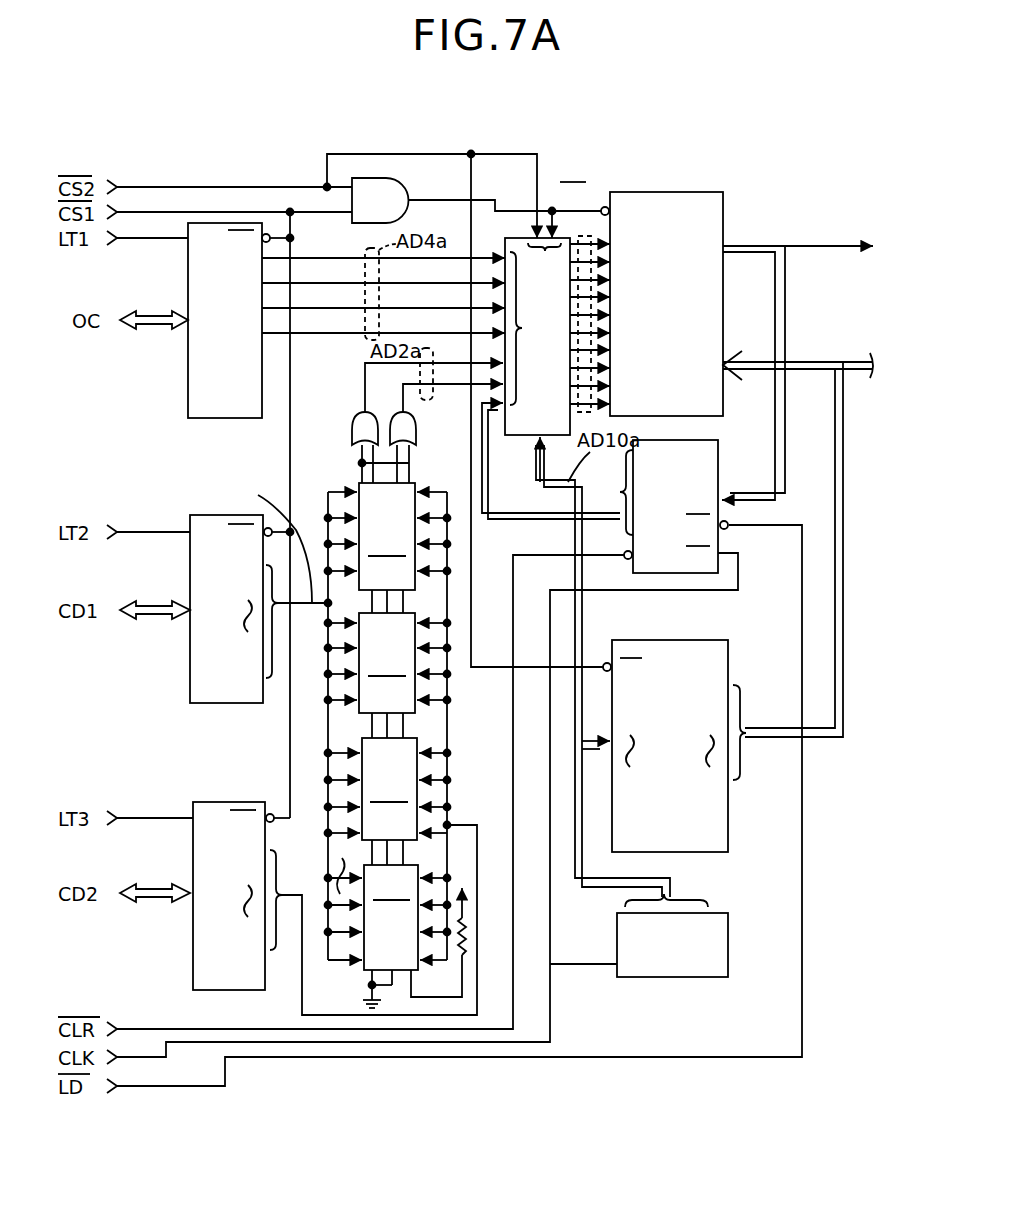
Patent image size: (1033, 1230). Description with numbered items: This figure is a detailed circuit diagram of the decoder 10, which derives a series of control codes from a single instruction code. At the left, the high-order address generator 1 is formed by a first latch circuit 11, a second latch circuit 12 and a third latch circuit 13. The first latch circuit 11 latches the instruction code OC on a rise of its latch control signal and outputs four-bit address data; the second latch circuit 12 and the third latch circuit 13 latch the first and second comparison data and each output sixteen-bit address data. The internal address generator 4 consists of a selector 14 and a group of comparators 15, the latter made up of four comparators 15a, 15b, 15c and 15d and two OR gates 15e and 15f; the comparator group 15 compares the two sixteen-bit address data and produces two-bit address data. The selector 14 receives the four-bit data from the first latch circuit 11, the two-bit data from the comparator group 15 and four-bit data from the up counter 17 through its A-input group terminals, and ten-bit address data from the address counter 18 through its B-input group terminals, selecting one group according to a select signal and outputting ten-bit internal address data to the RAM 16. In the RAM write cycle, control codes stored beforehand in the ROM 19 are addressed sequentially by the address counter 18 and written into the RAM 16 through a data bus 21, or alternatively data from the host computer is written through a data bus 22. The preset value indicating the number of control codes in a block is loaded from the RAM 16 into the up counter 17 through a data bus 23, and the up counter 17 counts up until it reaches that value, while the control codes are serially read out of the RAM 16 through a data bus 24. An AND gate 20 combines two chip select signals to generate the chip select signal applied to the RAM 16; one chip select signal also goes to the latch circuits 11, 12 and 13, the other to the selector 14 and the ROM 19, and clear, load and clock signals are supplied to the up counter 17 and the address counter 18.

The high-order address generator 1 is at (270, 182).
The internal address generator 4 is at (565, 186).
The decoder 10 is at (678, 185).
The first latch circuit 11 is at (188, 375).
The second latch circuit 12 is at (186, 677).
The third latch circuit 13 is at (191, 965).
The selector 14 is at (518, 353).
The group of comparators 15 is at (402, 684).
The comparator 15a is at (388, 536).
The comparator 15b is at (388, 663).
The comparator 15c is at (388, 789).
The comparator 15d is at (403, 936).
The OR gate 15e is at (356, 437).
The OR gate 15f is at (416, 424).
The RAM 16 is at (728, 200).
The up counter 17 is at (718, 462).
The address counter 18 is at (716, 978).
The ROM 19 is at (730, 655).
The AND gate 20 is at (404, 190).
The data bus 21 is at (842, 408).
The data bus 22 is at (792, 368).
The data bus 23 is at (778, 284).
The data bus 24 is at (836, 243).